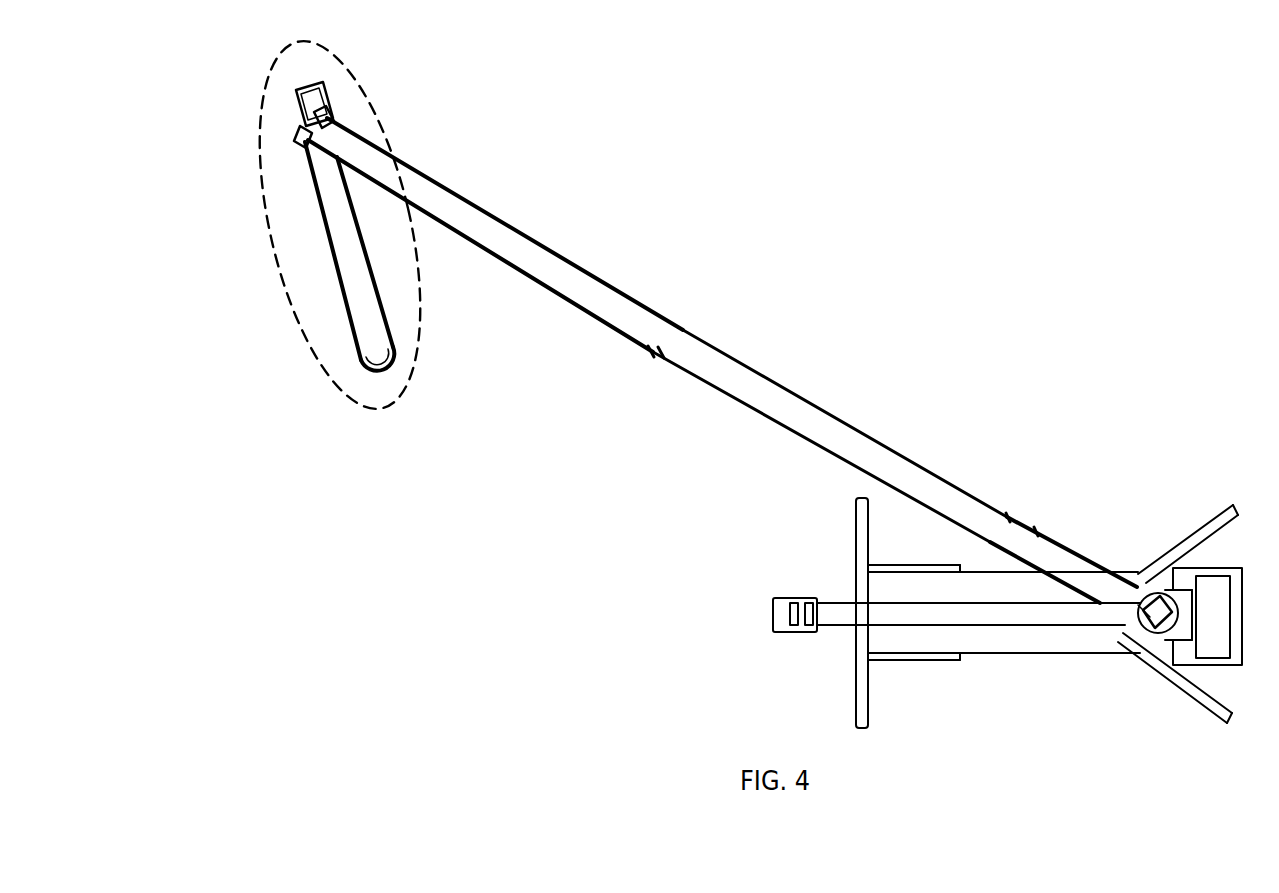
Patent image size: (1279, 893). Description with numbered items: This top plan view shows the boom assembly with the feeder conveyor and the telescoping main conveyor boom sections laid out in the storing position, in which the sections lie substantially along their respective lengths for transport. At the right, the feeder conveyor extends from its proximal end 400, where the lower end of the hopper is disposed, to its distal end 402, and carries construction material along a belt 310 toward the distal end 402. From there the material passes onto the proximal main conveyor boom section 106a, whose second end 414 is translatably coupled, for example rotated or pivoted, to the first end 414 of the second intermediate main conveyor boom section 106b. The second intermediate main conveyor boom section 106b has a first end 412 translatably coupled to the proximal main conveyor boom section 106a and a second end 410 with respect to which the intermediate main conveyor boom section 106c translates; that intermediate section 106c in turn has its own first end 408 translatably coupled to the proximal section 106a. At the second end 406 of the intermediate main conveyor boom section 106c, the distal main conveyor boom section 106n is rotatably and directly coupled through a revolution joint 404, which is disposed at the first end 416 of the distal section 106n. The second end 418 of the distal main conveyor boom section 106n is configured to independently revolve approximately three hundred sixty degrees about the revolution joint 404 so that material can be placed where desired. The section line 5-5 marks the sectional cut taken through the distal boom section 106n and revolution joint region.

The section line 5-5 is at (297, 268).
The proximal main conveyor boom section 106a is at (1088, 562).
The second intermediate main conveyor boom section 106b is at (707, 343).
The intermediate main conveyor boom section 106c is at (526, 236).
The distal main conveyor boom section 106n is at (346, 301).
The belt 310 is at (722, 360).
The proximal end of feeder conveyor 400 is at (772, 617).
The distal end of feeder conveyor 402 is at (1137, 608).
The revolution joint 404 is at (331, 121).
The second end of intermediate main conveyor boom section 406 is at (295, 141).
The first end of intermediate main conveyor boom section 408 is at (646, 352).
The second end of second intermediate main conveyor boom section 410 is at (656, 363).
The first end of second intermediate main conveyor boom section 412 is at (1008, 515).
The second end of proximal main conveyor boom section 414 is at (1038, 529).
The first end of distal main conveyor boom section 416 is at (293, 98).
The second end of distal main conveyor boom section 418 is at (385, 374).